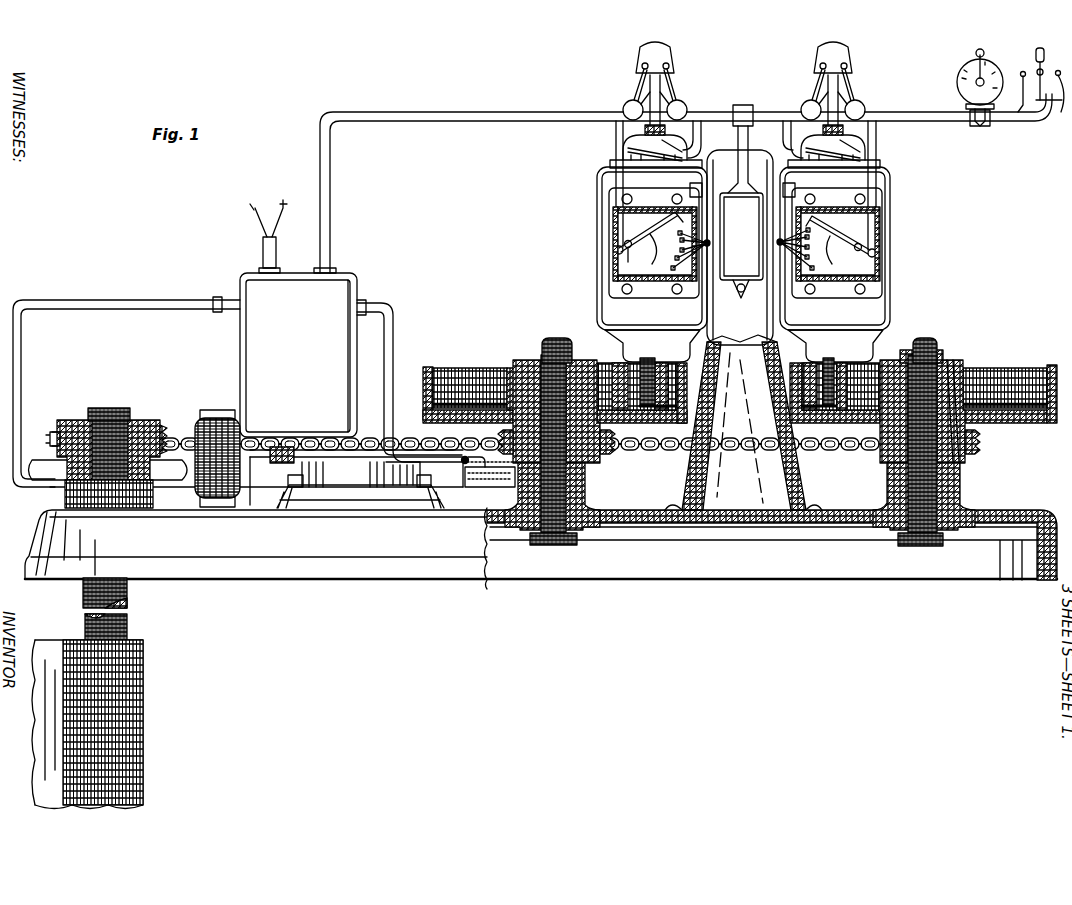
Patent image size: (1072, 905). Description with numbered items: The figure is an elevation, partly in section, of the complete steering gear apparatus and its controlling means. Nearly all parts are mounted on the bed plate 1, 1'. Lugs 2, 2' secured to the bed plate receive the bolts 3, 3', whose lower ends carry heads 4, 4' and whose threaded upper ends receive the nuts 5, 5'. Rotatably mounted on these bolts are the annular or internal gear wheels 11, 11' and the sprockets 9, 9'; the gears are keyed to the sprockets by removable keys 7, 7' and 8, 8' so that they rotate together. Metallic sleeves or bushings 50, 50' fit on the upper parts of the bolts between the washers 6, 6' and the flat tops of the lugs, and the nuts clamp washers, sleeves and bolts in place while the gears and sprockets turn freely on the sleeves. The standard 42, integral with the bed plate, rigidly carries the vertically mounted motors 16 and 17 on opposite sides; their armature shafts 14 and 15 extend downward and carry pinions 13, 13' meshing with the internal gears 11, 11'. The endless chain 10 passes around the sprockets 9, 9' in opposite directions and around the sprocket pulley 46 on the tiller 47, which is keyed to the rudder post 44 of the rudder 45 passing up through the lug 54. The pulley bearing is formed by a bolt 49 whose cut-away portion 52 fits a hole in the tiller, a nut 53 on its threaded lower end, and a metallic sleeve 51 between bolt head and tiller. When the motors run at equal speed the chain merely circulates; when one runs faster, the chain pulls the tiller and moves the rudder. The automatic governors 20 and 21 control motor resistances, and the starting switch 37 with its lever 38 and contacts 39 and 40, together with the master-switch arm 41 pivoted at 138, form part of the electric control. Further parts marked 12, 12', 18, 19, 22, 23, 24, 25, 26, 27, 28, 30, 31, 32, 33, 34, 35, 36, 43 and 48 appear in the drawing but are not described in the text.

The bed plate 1 is at (532, 548).
The base 1' is at (772, 531).
The lug 2 is at (560, 496).
The lug 2' is at (929, 496).
The bolt 3 is at (591, 444).
The bolt 3' is at (950, 444).
The bolt head 4 is at (556, 549).
The bolt head 4' is at (926, 548).
The nut 5 is at (549, 335).
The nut 5' is at (944, 340).
The washer 6 is at (517, 389).
The washer 6' is at (894, 395).
The removable key 7 is at (555, 377).
The removable key 7' is at (918, 385).
The removable key 8 is at (586, 398).
The removable key 8' is at (960, 399).
The sprocket pulley 9 is at (568, 452).
The sprocket pulley 9' is at (996, 442).
The endless chain 10 is at (647, 452).
The annular gear wheel 11 is at (420, 375).
The annular gear wheel 11' is at (1059, 382).
The ring 12 is at (470, 359).
The ring 12' is at (1005, 377).
The pinion 13 is at (670, 373).
The pinion 13' is at (828, 377).
The armature shaft 14 is at (637, 378).
The armature shaft 15 is at (829, 362).
The motor 16 is at (603, 308).
The motor 17 is at (875, 310).
The panel 18 is at (611, 250).
The panel 19 is at (884, 270).
The automatic governor 20 is at (652, 105).
The automatic governor 21 is at (832, 105).
The pipe 22 is at (612, 138).
The pipe 23 is at (880, 153).
The contact 24 is at (742, 243).
The contact 25 is at (844, 267).
The pivot 26 is at (627, 238).
The pivot 27 is at (838, 235).
The lever 28 is at (651, 228).
The arm 30 is at (656, 247).
The arm 31 is at (834, 250).
The contacts 32 is at (684, 249).
The contacts 33 is at (802, 249).
The switch box 34 is at (741, 245).
The pipe 35 is at (512, 118).
The gauge 36 is at (958, 88).
The starting switch 37 is at (1054, 73).
The lever 38 is at (993, 118).
The contact 39 is at (1018, 80).
The contact 40 is at (1057, 100).
The arm 41 is at (973, 57).
The standard 42 is at (790, 497).
The tank 43 is at (298, 318).
The rudder post 44 is at (130, 597).
The rudder 45 is at (45, 650).
The sprocket pulley 46 is at (135, 416).
The tiller 47 is at (160, 482).
The shaft 48 is at (103, 424).
The bolt 49 is at (78, 422).
The metallic sleeve 50 is at (501, 377).
The metallic sleeve 50' is at (976, 376).
The metallic sleeve 51 is at (163, 428).
The cut-away portion 52 is at (60, 483).
The nut 53 is at (108, 490).
The lug 54 is at (67, 500).
The pivot 138 is at (996, 93).